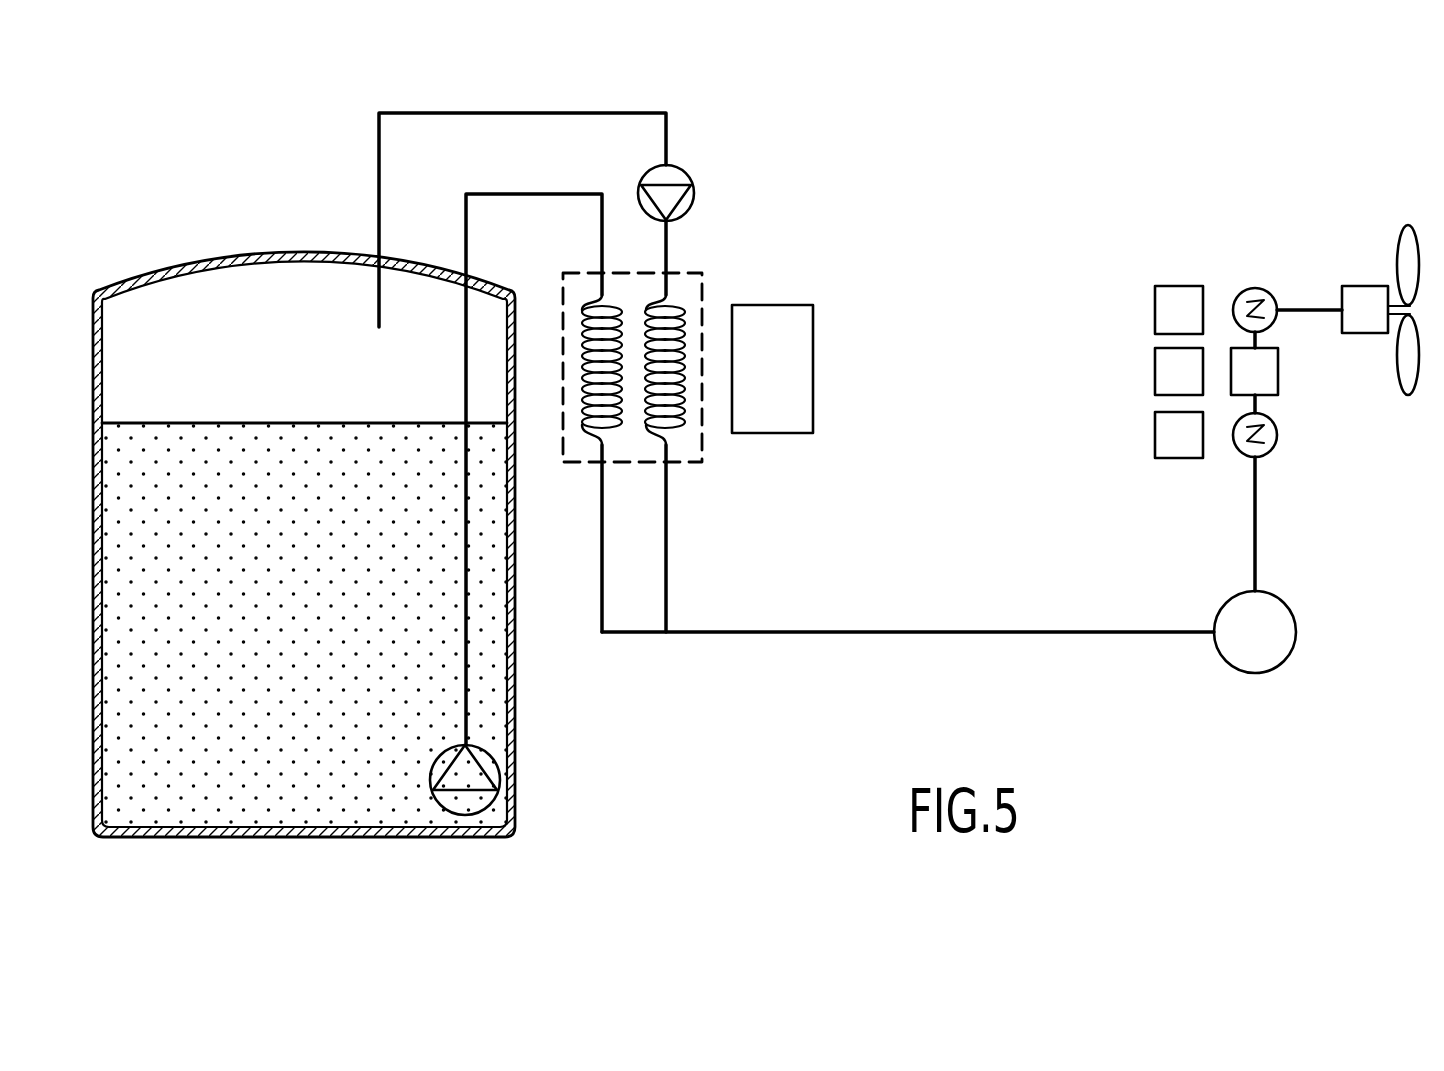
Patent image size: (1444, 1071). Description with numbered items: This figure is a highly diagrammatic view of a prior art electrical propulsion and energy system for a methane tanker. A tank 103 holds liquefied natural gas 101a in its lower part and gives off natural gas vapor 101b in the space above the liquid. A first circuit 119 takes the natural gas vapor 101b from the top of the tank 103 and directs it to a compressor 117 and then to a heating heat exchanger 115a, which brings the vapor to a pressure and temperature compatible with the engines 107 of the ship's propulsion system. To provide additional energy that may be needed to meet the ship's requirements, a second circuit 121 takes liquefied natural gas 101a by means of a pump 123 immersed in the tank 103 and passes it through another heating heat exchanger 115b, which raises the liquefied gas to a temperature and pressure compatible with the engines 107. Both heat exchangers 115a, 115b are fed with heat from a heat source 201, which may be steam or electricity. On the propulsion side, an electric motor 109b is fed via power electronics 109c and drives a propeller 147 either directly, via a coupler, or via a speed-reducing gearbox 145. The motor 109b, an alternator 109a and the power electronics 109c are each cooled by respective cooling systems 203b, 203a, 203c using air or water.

The liquefied natural gas 101a is at (276, 783).
The natural gas vapor 101b is at (205, 314).
The tank 103 is at (320, 252).
The engine 107 is at (1255, 620).
The alternator 109a is at (1271, 436).
The electric motor 109b is at (1270, 296).
The power electronics 109c is at (1261, 372).
The heating heat exchanger 115a is at (674, 313).
The heating heat exchanger 115b is at (587, 328).
The compressor 117 is at (688, 184).
The first circuit 119 is at (452, 106).
The second circuit 121 is at (568, 193).
The pump 123 is at (474, 771).
The speed-reducing gearbox 145 is at (1367, 304).
The propeller 147 is at (1412, 258).
The heat source 201 is at (788, 360).
The cooling system 203a is at (1164, 430).
The cooling system 203b is at (1170, 308).
The cooling system 203c is at (1168, 369).